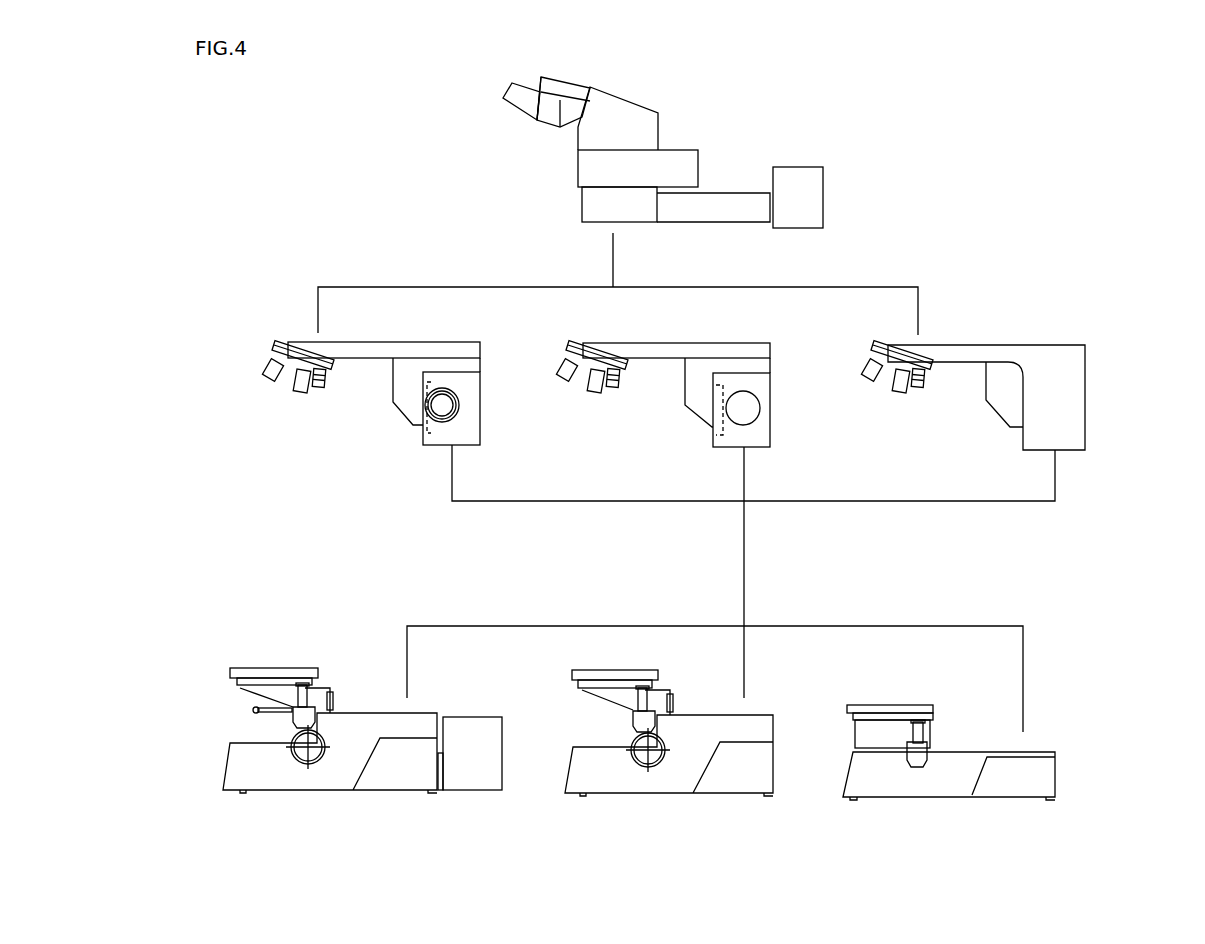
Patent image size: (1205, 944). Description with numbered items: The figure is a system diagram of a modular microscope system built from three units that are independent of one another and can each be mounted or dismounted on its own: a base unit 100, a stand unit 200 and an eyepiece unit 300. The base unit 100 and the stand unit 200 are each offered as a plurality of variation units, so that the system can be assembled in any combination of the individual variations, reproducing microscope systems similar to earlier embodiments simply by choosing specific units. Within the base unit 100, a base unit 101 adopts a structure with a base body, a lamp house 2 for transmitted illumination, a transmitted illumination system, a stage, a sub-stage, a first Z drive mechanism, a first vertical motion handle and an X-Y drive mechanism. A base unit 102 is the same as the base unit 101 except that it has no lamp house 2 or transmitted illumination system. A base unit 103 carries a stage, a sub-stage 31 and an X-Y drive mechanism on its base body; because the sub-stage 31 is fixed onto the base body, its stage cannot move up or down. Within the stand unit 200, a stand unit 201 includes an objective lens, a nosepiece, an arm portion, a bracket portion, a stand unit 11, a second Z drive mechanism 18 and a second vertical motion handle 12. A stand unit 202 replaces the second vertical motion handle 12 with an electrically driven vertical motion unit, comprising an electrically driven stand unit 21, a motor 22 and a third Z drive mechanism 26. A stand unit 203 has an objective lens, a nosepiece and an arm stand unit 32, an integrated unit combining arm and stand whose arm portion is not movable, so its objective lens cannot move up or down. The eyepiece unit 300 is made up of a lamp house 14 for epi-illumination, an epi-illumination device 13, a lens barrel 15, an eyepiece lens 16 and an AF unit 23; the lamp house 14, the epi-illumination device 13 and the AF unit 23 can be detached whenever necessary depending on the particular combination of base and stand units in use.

The lamp house for transmitted illumination 2 is at (462, 783).
The stand unit 11 is at (480, 395).
The second vertical motion handle 12 is at (453, 420).
The epi-illumination device 13 is at (645, 215).
The lamp house for epi-illumination 14 is at (817, 187).
The lens barrel 15 is at (630, 115).
The eyepiece lens 16 is at (512, 100).
The second Z drive mechanism 18 is at (423, 424).
The electrically driven stand unit 21 is at (772, 402).
The motor 22 is at (757, 420).
The AF unit 23 is at (683, 155).
The third Z drive mechanism 26 is at (713, 430).
The sub-stage 31 is at (862, 732).
The arm stand unit 32 is at (1078, 390).
The base unit 100 is at (680, 744).
The base unit 101 is at (436, 685).
The base unit 102 is at (753, 682).
The base unit 103 is at (1086, 688).
The stand unit 200 is at (696, 372).
The stand unit 201 is at (434, 328).
The stand unit 202 is at (741, 330).
The stand unit 203 is at (1088, 332).
The eyepiece unit 300 is at (841, 127).